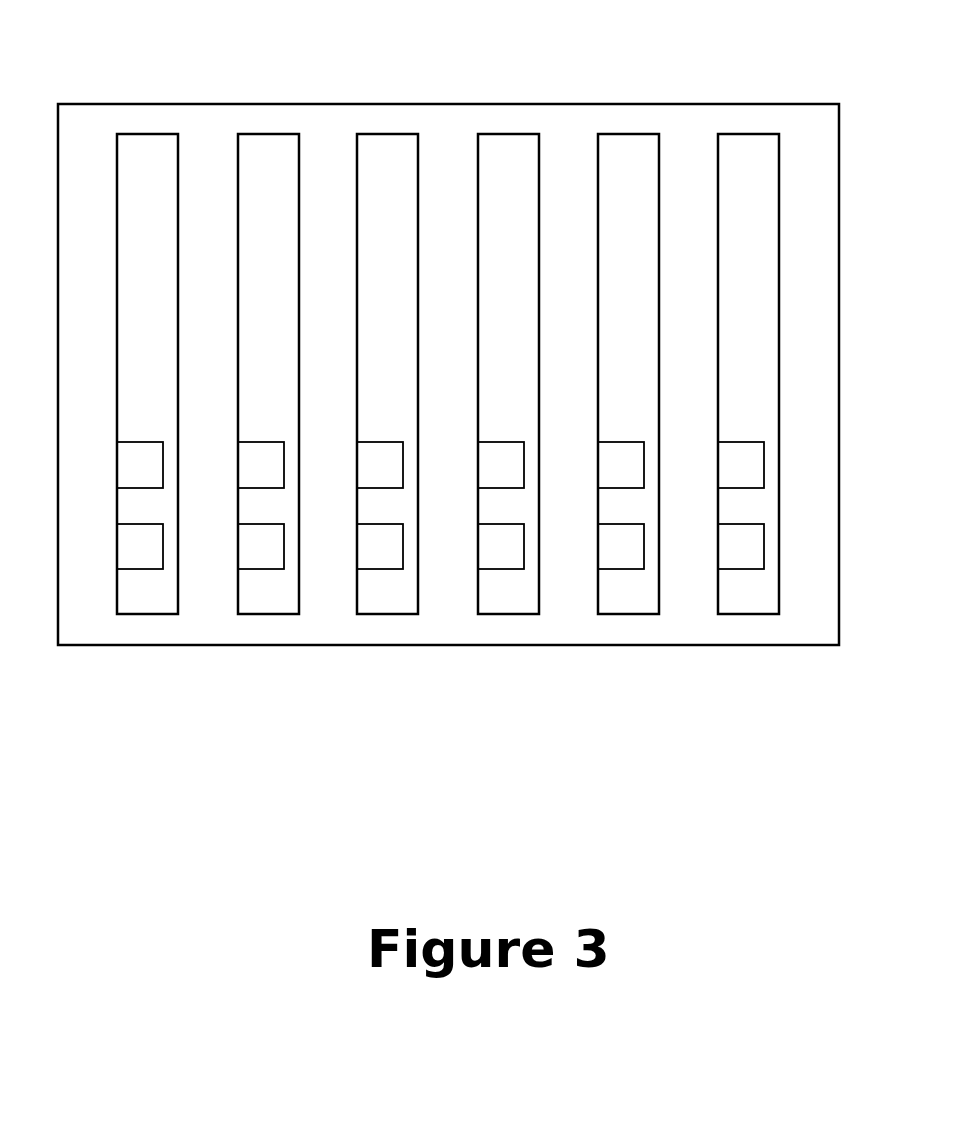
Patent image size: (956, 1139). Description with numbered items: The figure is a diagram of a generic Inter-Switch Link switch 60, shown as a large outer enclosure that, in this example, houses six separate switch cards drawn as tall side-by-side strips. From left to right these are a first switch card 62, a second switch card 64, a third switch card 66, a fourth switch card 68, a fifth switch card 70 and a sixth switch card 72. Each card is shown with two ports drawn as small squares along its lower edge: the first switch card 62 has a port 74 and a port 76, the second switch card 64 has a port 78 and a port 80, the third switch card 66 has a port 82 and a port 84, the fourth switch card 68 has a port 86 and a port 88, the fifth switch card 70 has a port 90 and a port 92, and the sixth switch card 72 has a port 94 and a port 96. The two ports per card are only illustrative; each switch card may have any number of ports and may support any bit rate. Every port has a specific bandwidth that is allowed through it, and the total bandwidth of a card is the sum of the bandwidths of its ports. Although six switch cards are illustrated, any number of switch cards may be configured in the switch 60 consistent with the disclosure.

The generic ISL switch 60 is at (540, 104).
The first switch card 62 is at (147, 614).
The second switch card 64 is at (268, 614).
The third switch card 66 is at (387, 421).
The fourth switch card 68 is at (508, 614).
The fifth switch card 70 is at (628, 614).
The sixth switch card 72 is at (748, 614).
The port 74 is at (117, 525).
The port 76 is at (117, 443).
The port 78 is at (238, 443).
The port 80 is at (238, 525).
The port 82 is at (357, 443).
The port 84 is at (357, 525).
The port 86 is at (478, 443).
The port 88 is at (478, 525).
The port 90 is at (598, 443).
The port 92 is at (598, 525).
The port 94 is at (718, 443).
The port 96 is at (718, 525).